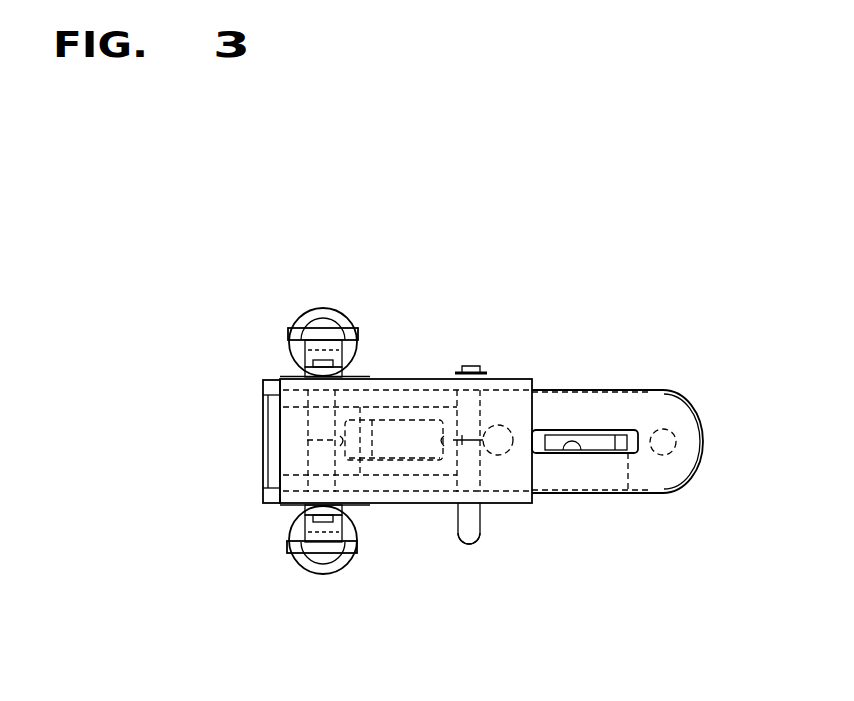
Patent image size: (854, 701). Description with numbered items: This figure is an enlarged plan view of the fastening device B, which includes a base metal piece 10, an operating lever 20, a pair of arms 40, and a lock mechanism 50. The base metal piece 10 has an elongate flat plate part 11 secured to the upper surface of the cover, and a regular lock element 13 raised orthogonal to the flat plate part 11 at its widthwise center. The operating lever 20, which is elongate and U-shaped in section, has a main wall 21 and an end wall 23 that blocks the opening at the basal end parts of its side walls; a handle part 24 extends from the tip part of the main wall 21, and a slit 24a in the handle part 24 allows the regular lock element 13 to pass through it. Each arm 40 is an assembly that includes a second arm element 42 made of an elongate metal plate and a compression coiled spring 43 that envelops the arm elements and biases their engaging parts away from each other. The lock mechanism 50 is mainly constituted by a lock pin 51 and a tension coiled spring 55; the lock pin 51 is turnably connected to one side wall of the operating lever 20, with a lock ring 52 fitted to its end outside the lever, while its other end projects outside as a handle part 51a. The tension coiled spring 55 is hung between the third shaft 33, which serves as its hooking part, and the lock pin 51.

The base metal piece 10 is at (712, 448).
The elongate flat plate part 11 is at (699, 422).
The regular lock element 13 is at (598, 441).
The operating lever 20 is at (425, 372).
The main wall 21 is at (523, 390).
The end wall 23 is at (262, 420).
The handle part 24 is at (653, 405).
The slit 24a is at (582, 452).
The third shaft 33 is at (307, 460).
The arm 40 is at (277, 328).
The second arm element 42 is at (303, 368).
The compression coiled spring 43 is at (310, 315).
The lock mechanism 50 is at (407, 415).
The lock pin 51 is at (480, 521).
The handle part 51a is at (459, 523).
The lock ring 52 is at (483, 368).
The tension coiled spring 55 is at (405, 462).
The fastening device B is at (595, 378).